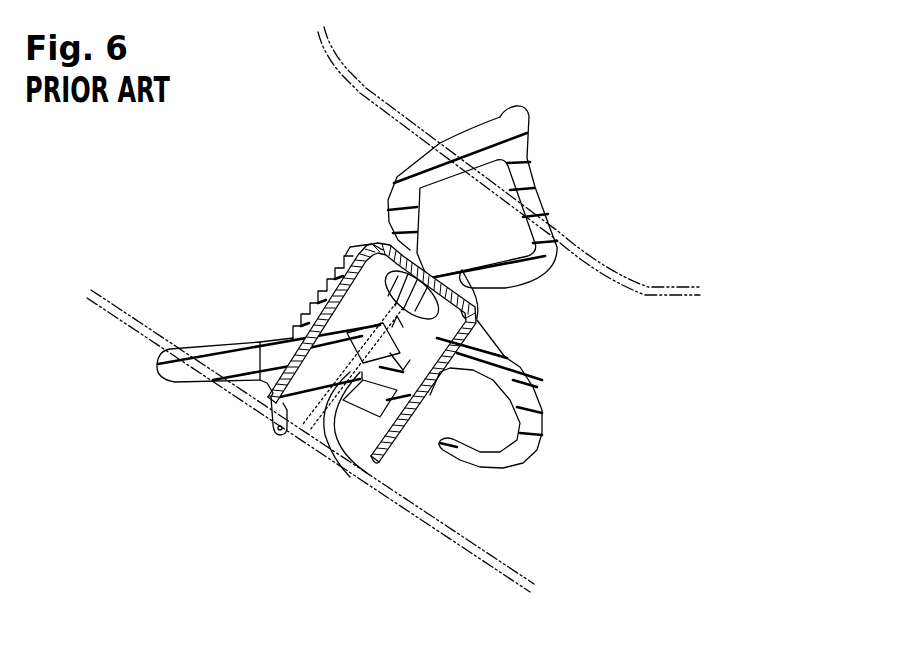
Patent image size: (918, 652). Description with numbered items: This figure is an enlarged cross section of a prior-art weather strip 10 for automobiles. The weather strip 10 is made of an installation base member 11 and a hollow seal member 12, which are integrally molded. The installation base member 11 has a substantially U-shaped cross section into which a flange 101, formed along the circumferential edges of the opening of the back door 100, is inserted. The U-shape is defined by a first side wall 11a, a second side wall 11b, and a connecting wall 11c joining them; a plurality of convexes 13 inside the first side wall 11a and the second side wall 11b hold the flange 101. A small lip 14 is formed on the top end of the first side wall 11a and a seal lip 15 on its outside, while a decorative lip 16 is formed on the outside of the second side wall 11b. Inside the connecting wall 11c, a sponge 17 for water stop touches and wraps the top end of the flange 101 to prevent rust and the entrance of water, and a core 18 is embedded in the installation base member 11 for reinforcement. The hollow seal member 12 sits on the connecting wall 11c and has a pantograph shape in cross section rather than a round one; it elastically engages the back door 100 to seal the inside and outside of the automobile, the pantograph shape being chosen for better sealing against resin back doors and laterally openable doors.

The weather strip 10 is at (568, 325).
The installation base member 11 is at (347, 266).
The first side wall 11a is at (325, 300).
The second side wall 11b is at (400, 440).
The connecting wall 11c is at (472, 300).
The hollow seal member 12 is at (483, 133).
The convexes 13 is at (322, 377).
The small lip 14 is at (273, 427).
The seal lip 15 is at (154, 360).
The decorative lip 16 is at (540, 436).
The sponge 17 is at (357, 250).
The core 18 is at (300, 328).
The back door 100 is at (604, 257).
The flange 101 is at (440, 352).